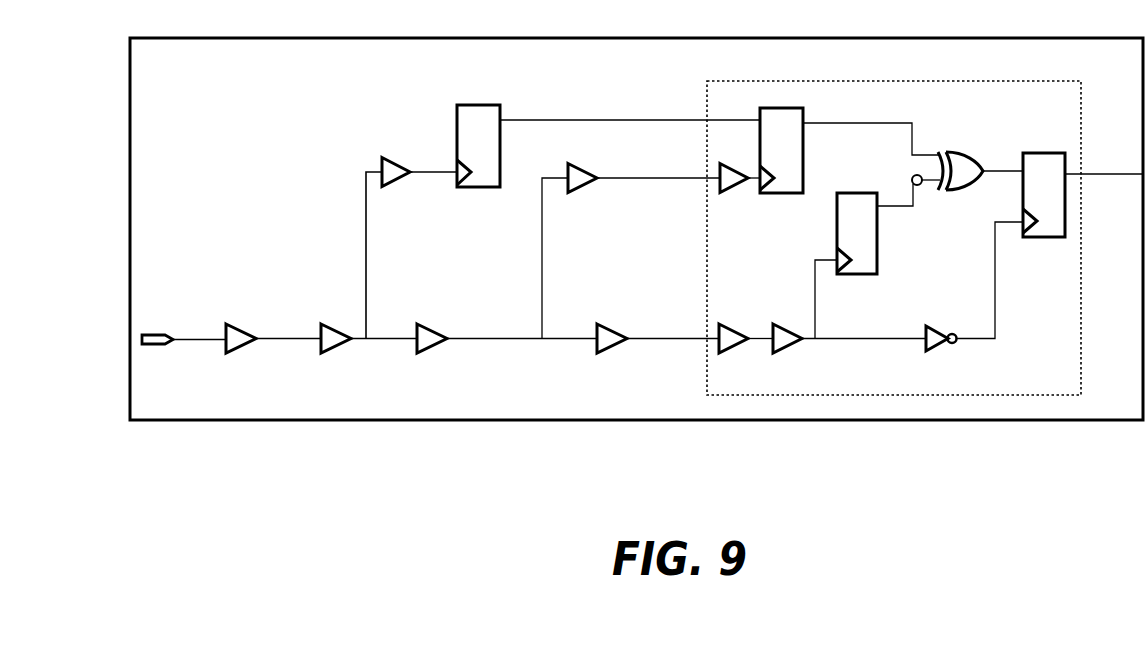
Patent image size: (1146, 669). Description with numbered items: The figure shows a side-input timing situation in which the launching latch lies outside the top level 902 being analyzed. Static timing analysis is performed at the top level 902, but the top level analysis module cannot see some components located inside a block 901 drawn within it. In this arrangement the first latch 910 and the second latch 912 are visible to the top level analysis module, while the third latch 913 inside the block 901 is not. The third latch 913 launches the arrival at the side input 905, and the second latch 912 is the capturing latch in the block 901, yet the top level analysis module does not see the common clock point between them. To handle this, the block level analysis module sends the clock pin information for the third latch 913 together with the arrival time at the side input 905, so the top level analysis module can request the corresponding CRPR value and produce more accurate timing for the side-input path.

The block 901 is at (894, 238).
The top level 902 is at (636, 229).
The side input 905 is at (920, 185).
The latch 1 910 is at (792, 108).
The latch 2 912 is at (1062, 153).
The latch 3 913 is at (870, 274).